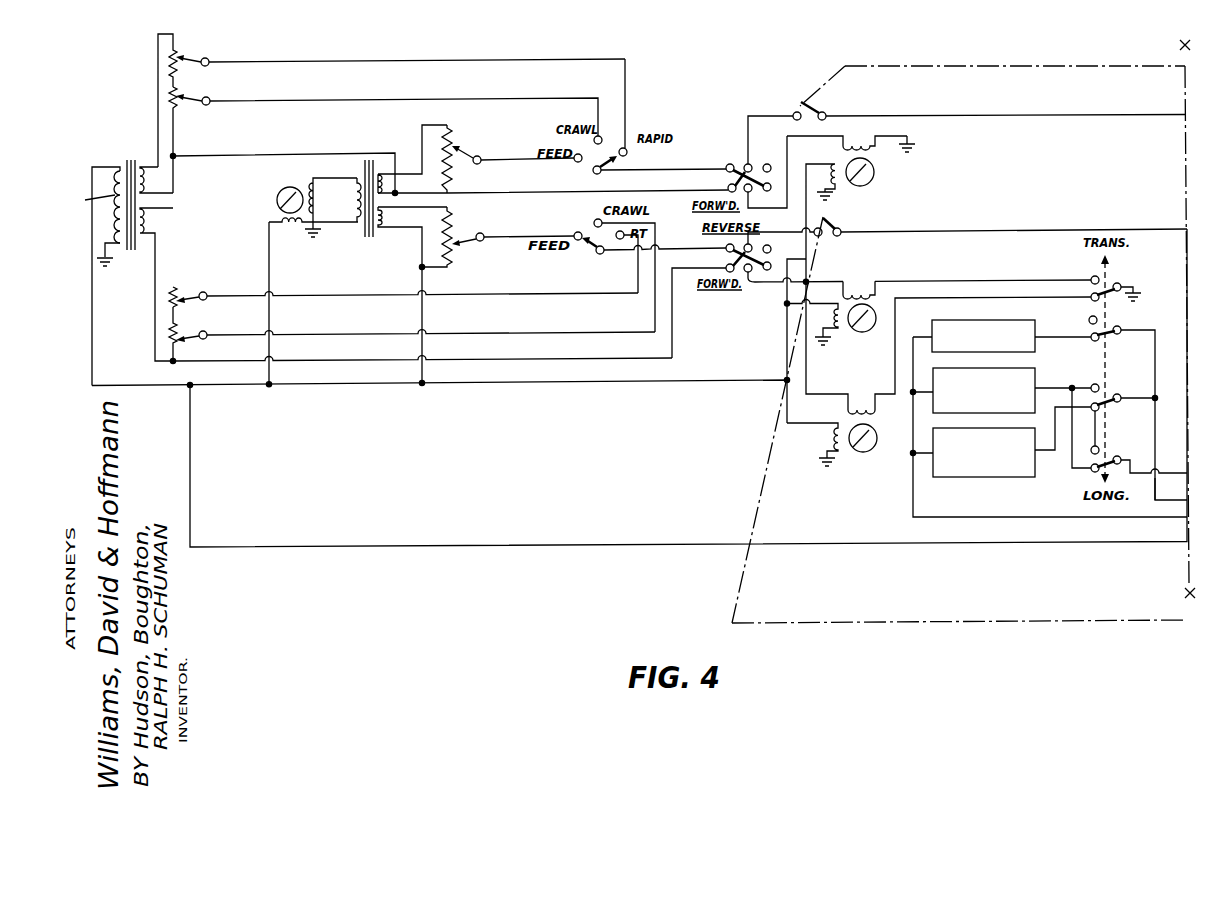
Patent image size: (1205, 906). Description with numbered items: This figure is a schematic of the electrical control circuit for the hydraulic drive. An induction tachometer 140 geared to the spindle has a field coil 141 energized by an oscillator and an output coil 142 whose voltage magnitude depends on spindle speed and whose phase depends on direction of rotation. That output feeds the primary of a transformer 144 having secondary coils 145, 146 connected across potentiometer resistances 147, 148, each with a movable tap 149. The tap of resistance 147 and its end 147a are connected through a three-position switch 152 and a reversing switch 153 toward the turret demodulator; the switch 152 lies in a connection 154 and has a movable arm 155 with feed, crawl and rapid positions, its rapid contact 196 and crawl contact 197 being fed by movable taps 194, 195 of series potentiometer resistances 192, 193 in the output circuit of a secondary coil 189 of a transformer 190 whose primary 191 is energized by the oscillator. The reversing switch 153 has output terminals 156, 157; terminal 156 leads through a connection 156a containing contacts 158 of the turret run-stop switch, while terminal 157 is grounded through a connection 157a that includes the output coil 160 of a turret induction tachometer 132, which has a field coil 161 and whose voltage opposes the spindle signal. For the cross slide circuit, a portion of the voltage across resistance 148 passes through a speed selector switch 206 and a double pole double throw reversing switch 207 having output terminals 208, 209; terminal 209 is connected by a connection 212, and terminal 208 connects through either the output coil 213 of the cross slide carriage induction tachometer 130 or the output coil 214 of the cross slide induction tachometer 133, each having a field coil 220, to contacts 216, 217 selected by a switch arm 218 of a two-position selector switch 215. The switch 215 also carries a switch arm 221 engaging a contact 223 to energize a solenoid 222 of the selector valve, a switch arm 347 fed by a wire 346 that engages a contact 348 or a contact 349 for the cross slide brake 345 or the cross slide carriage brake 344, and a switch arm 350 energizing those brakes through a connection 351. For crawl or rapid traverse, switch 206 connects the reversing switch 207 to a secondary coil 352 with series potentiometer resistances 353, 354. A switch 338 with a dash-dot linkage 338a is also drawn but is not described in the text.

The cross slide carriage induction tachometer 130 is at (862, 453).
The turret induction tachometer 132 is at (873, 182).
The cross slide induction tachometer 133 is at (860, 332).
The spindle induction tachometer 140 is at (280, 195).
The field coil 141 is at (290, 228).
The output coil 142 is at (312, 178).
The transformer 144 is at (346, 217).
The secondary coil 145 is at (394, 172).
The secondary coil 146 is at (386, 216).
The potentiometer resistance 147 is at (445, 180).
The end of potentiometer resistance 147a is at (450, 190).
The potentiometer resistance 148 is at (450, 212).
The movable tap 149 is at (479, 156).
The three-position switch 152 is at (592, 172).
The reversing switch 153 is at (754, 164).
The connection 154 is at (670, 170).
The movable arm 155 is at (618, 158).
The output terminal 156 is at (731, 164).
The connection 156a is at (1048, 112).
The output terminal 157 is at (766, 191).
The connection 157a is at (789, 144).
The contacts 158 is at (822, 106).
The output coil 160 is at (880, 136).
The field coil 161 is at (830, 192).
The secondary coil 189 is at (150, 180).
The transformer 190 is at (137, 148).
The primary 191 is at (85, 200).
The potentiometer resistance 192 is at (172, 62).
The potentiometer resistance 193 is at (172, 100).
The movable tap 194 is at (178, 58).
The movable tap 195 is at (178, 97).
The rapid contact 196 is at (635, 136).
The crawl contact 197 is at (625, 108).
The speed selector switch 206 is at (591, 227).
The double pole double throw reversing switch 207 is at (727, 257).
The output terminal 208 is at (765, 284).
The output terminal 209 is at (781, 227).
The connection 212 is at (970, 232).
The output coil 213 is at (870, 405).
The output coil 214 is at (872, 284).
The two-position selector switch 215 is at (1121, 284).
The contact 216 is at (1091, 299).
The contact 217 is at (1093, 276).
The switch arm 218 is at (1137, 301).
The field coil 220 is at (835, 316).
The switch arm 221 is at (1118, 334).
The solenoid 222 is at (998, 318).
The contact 223 is at (1093, 341).
The switch 338 is at (840, 236).
The mechanical link 338a is at (799, 420).
The cross slide carriage brake 344 is at (1000, 370).
The cross slide brake 345 is at (990, 488).
The wire 346 is at (1178, 472).
The switch arm 347 is at (1122, 438).
The contact 348 is at (1092, 472).
The contact 349 is at (1090, 454).
The switch arm 350 is at (1113, 394).
The connection 351 is at (1158, 412).
The secondary coil 352 is at (150, 222).
The potentiometer resistance 353 is at (170, 296).
The potentiometer resistance 354 is at (170, 335).